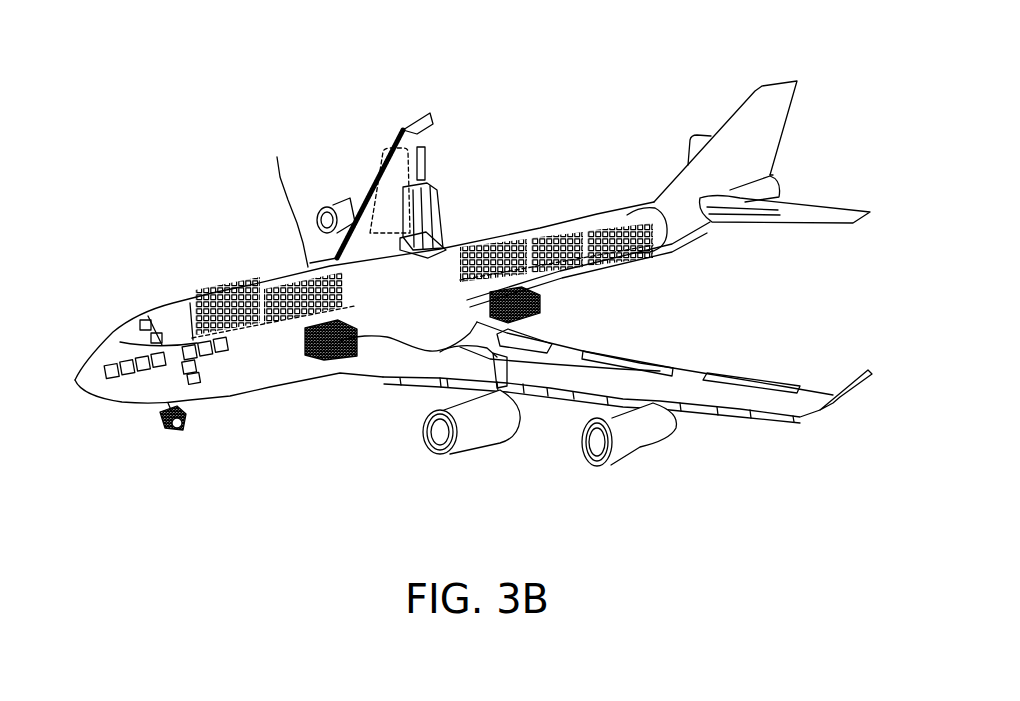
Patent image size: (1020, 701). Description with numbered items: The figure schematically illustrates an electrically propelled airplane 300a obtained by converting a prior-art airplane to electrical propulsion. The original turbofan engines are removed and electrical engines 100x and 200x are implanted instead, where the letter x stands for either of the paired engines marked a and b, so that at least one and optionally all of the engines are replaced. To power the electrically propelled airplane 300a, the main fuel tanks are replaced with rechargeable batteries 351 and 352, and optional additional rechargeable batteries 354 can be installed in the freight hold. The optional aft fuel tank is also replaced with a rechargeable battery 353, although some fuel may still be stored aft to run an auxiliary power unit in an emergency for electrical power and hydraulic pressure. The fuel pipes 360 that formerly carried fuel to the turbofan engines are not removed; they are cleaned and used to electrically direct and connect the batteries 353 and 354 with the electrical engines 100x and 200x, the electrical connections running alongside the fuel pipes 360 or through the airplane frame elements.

The electrically propelled airplane 300a is at (595, 75).
The rechargeable battery 351 is at (400, 264).
The rechargeable battery 352 is at (403, 130).
The electrical engine 100x is at (447, 344).
The electrical engine 200x is at (340, 196).
The rechargeable battery 353 is at (773, 175).
The rechargeable batteries 354 is at (561, 282).
The fuel pipes 360 is at (628, 259).